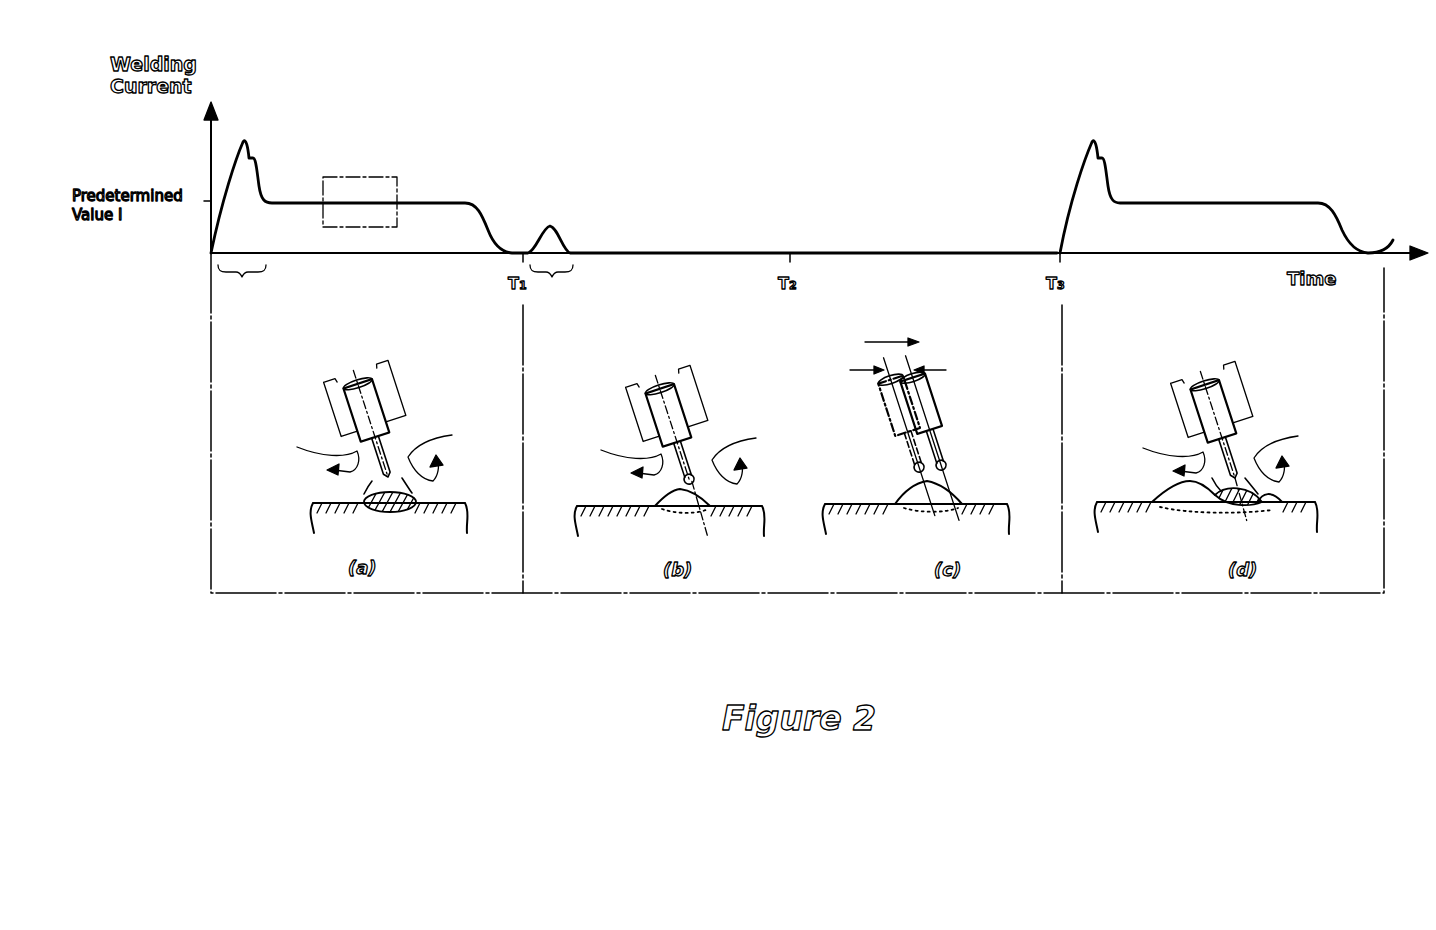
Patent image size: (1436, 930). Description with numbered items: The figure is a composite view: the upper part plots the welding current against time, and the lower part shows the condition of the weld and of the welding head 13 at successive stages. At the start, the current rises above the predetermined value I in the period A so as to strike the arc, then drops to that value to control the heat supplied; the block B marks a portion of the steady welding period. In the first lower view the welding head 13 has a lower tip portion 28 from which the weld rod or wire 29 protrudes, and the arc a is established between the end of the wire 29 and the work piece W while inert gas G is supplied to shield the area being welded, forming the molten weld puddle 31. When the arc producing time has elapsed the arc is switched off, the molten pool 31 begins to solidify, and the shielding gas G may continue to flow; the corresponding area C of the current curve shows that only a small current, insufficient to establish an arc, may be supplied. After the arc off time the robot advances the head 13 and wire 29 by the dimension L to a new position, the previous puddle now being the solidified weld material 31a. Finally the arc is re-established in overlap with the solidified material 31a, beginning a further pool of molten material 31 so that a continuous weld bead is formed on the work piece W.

The welding head 13 is at (330, 405).
The lower tip portion 28 is at (398, 395).
The weld rod or wire 29 is at (396, 452).
The molten weld puddle 31 is at (390, 516).
The solidified weld material 31a is at (914, 503).
The work piece W is at (458, 502).
The inert gas G is at (790, 455).
The arc a is at (352, 488).
The dimension L is at (890, 356).
The arc striking period A is at (242, 285).
The block b B is at (378, 177).
The arc shut-off area C is at (551, 286).